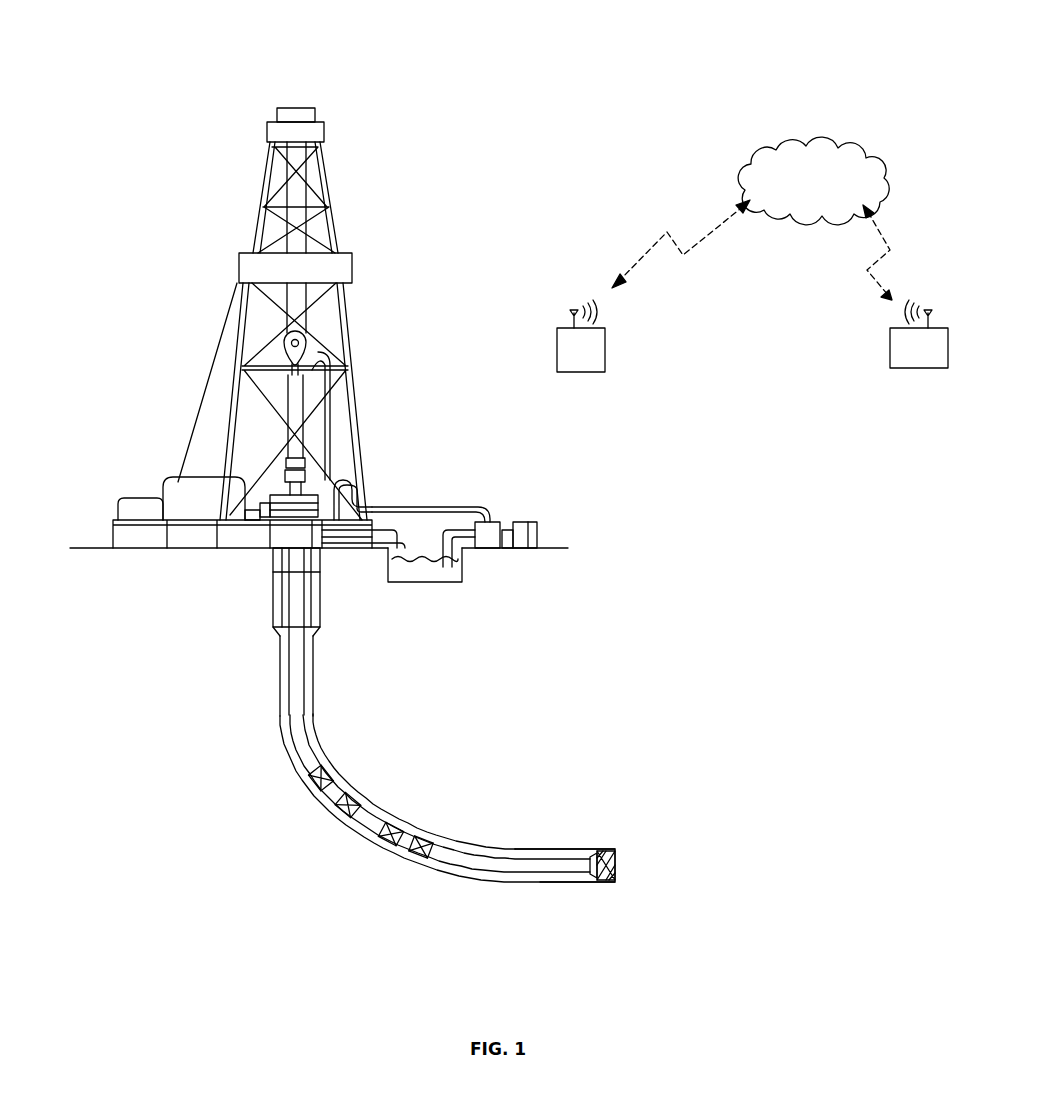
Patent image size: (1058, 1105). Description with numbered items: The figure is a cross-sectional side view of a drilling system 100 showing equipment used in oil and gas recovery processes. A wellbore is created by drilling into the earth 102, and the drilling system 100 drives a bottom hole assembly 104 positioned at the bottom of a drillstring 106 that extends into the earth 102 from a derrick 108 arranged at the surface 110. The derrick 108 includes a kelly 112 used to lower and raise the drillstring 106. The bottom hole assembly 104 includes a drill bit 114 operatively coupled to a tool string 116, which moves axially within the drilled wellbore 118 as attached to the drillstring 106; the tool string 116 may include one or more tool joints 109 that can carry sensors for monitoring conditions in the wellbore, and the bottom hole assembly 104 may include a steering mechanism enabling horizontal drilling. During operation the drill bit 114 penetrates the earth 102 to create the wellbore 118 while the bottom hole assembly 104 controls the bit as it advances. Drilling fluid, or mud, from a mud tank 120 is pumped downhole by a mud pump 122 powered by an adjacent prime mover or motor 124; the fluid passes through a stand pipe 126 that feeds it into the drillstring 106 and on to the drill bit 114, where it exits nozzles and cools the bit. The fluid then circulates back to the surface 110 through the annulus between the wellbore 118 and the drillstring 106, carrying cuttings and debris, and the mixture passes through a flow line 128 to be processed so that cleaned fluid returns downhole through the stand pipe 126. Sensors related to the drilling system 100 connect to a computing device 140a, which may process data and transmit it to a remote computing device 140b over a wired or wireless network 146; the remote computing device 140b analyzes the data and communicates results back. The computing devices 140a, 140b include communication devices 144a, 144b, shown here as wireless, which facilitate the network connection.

The drilling system 100 is at (538, 52).
The earth 102 is at (92, 604).
The bottom hole assembly 104 is at (560, 850).
The drillstring 106 is at (305, 702).
The derrick 108 is at (232, 330).
The tool joints 109 is at (340, 780).
The surface 110 is at (80, 547).
The kelly 112 is at (305, 344).
The drill bit 114 is at (620, 862).
The tool string 116 is at (484, 808).
The wellbore 118 is at (562, 883).
The mud tank 120 is at (430, 575).
The mud pump 122 is at (493, 527).
The motor 124 is at (536, 530).
The stand pipe 126 is at (340, 430).
The flow line 128 is at (401, 530).
The computing device 140a is at (557, 348).
The remote computing device 140b is at (915, 368).
The communication device 144a is at (585, 290).
The communication device 144b is at (935, 300).
The network 146 is at (848, 160).